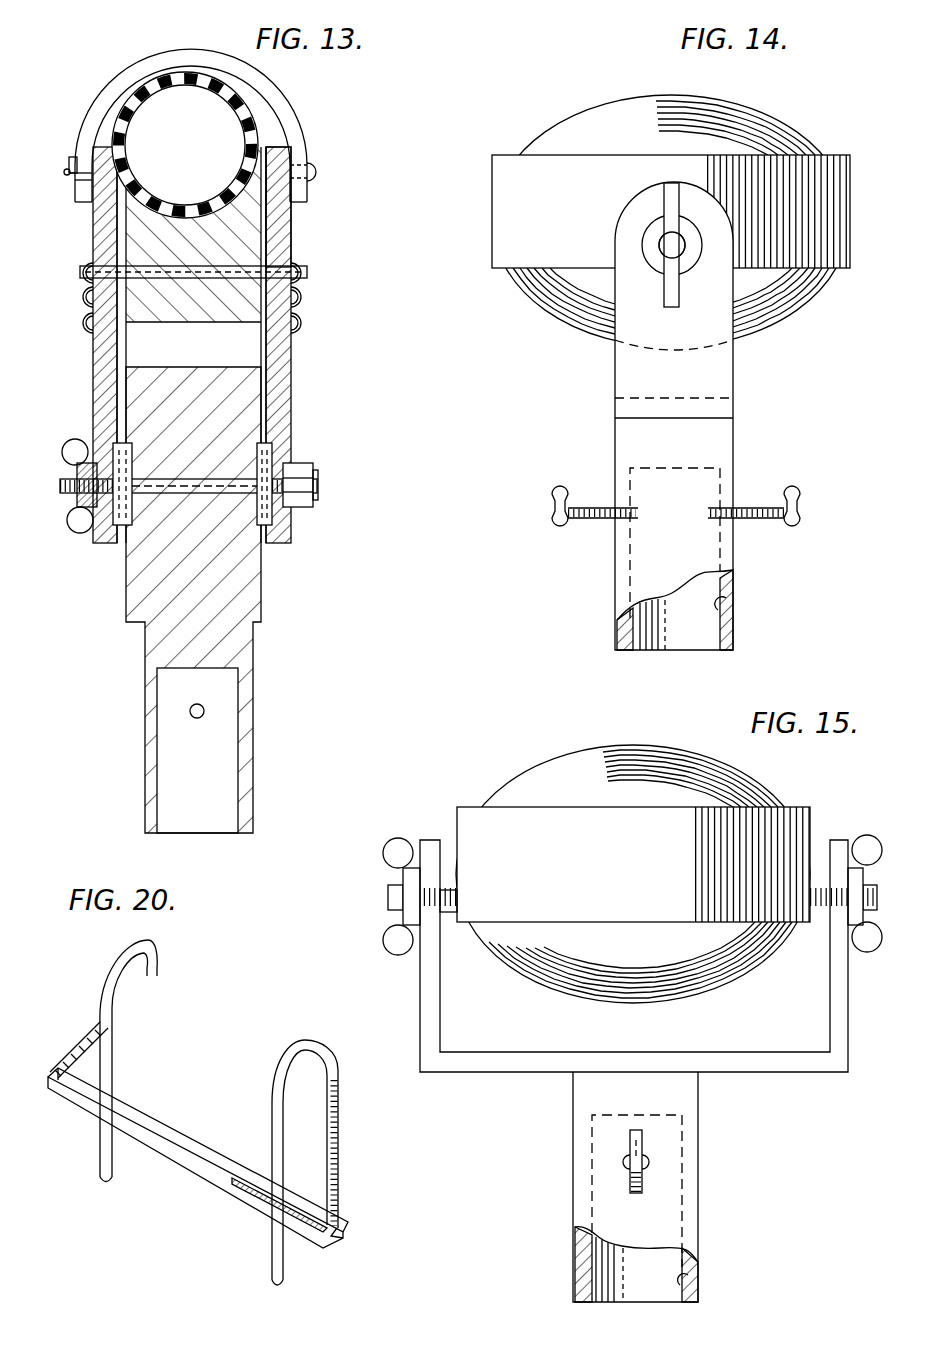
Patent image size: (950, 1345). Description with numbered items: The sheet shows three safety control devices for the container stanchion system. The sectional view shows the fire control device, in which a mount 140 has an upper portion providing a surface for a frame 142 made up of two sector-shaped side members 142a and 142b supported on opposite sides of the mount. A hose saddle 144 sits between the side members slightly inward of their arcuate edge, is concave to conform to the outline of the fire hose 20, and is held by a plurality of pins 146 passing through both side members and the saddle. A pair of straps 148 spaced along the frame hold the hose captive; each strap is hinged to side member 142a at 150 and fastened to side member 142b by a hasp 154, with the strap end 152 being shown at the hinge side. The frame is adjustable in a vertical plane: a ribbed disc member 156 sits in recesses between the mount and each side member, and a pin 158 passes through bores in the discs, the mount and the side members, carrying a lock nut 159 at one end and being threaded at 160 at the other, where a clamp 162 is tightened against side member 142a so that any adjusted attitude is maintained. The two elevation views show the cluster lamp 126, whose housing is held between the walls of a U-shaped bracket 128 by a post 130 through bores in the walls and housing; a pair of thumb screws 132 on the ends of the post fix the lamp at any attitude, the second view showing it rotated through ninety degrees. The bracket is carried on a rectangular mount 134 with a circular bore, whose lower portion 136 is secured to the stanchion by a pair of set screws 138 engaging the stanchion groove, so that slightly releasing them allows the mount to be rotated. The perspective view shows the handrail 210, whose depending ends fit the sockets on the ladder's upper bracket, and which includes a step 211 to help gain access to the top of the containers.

In FIG. 13, the fire hose 20 is at (264, 123).
In FIG. 13, the mount 140 is at (141, 598).
In FIG. 13, the frame 142 is at (283, 408).
In FIG. 13, the side member 142a is at (293, 254).
In FIG. 13, the side member 142b is at (95, 382).
In FIG. 13, the hose saddle 144 is at (243, 231).
In FIG. 13, the pins 146 is at (301, 320).
In FIG. 13, the straps 148 is at (94, 108).
In FIG. 13, the hinge 150 is at (72, 174).
In FIG. 13, the strap end 152 is at (80, 203).
In FIG. 13, the hasp 154 is at (318, 170).
In FIG. 13, the disc member 156 is at (272, 520).
In FIG. 13, the pin 158 is at (298, 465).
In FIG. 13, the lock nut 159 is at (312, 497).
In FIG. 13, the threaded end 160 is at (70, 497).
In FIG. 13, the clamp 162 is at (72, 443).
In FIG. 14, the cluster lamp 126 is at (566, 311).
In FIG. 15, the cluster lamp 126 is at (628, 978).
In FIG. 14, the bracket 128 is at (712, 374).
In FIG. 15, the bracket 128 is at (435, 1030).
In FIG. 14, the post 130 is at (671, 211).
In FIG. 15, the post 130 is at (392, 896).
In FIG. 15, the thumb screws 132 is at (395, 845).
In FIG. 14, the mount 134 is at (629, 459).
In FIG. 15, the mount 134 is at (581, 1118).
In FIG. 14, the post 136 is at (726, 616).
In FIG. 15, the post 136 is at (690, 1286).
In FIG. 14, the set screws 138 is at (793, 500).
In FIG. 15, the set screws 138 is at (630, 1147).
In FIG. 20, the handrail 210 is at (112, 1055).
In FIG. 20, the step 211 is at (188, 1148).